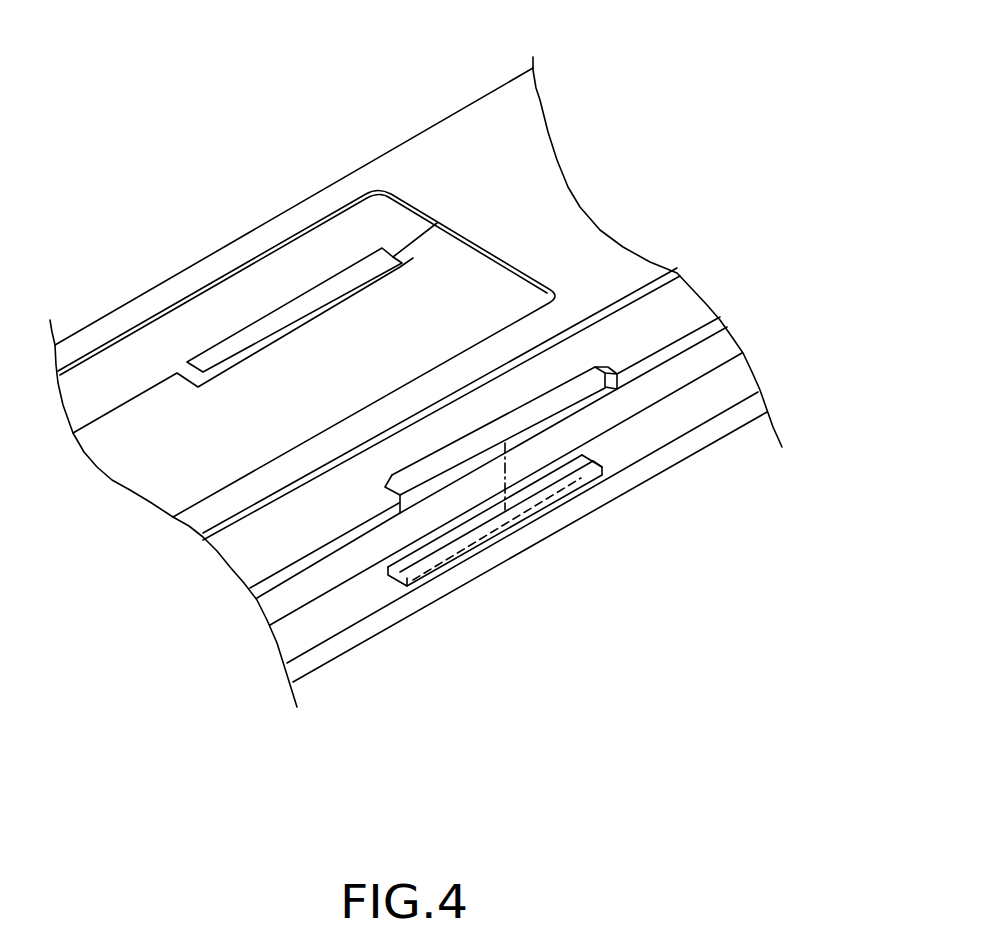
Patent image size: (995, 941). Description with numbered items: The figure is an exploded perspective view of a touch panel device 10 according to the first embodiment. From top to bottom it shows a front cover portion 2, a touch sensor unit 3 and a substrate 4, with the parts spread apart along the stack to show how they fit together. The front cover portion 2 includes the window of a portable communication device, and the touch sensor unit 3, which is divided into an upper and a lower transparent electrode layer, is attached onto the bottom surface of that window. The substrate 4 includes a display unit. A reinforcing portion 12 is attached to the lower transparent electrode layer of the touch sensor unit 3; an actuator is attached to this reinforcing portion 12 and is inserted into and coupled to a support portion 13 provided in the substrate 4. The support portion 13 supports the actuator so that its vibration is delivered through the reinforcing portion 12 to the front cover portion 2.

The touch panel device 10 is at (674, 15).
The front cover portion 2 is at (297, 220).
The touch sensor unit 3 is at (690, 303).
The substrate 4 is at (670, 428).
The reinforcing portion 12 is at (565, 378).
The support portion 13 is at (567, 488).